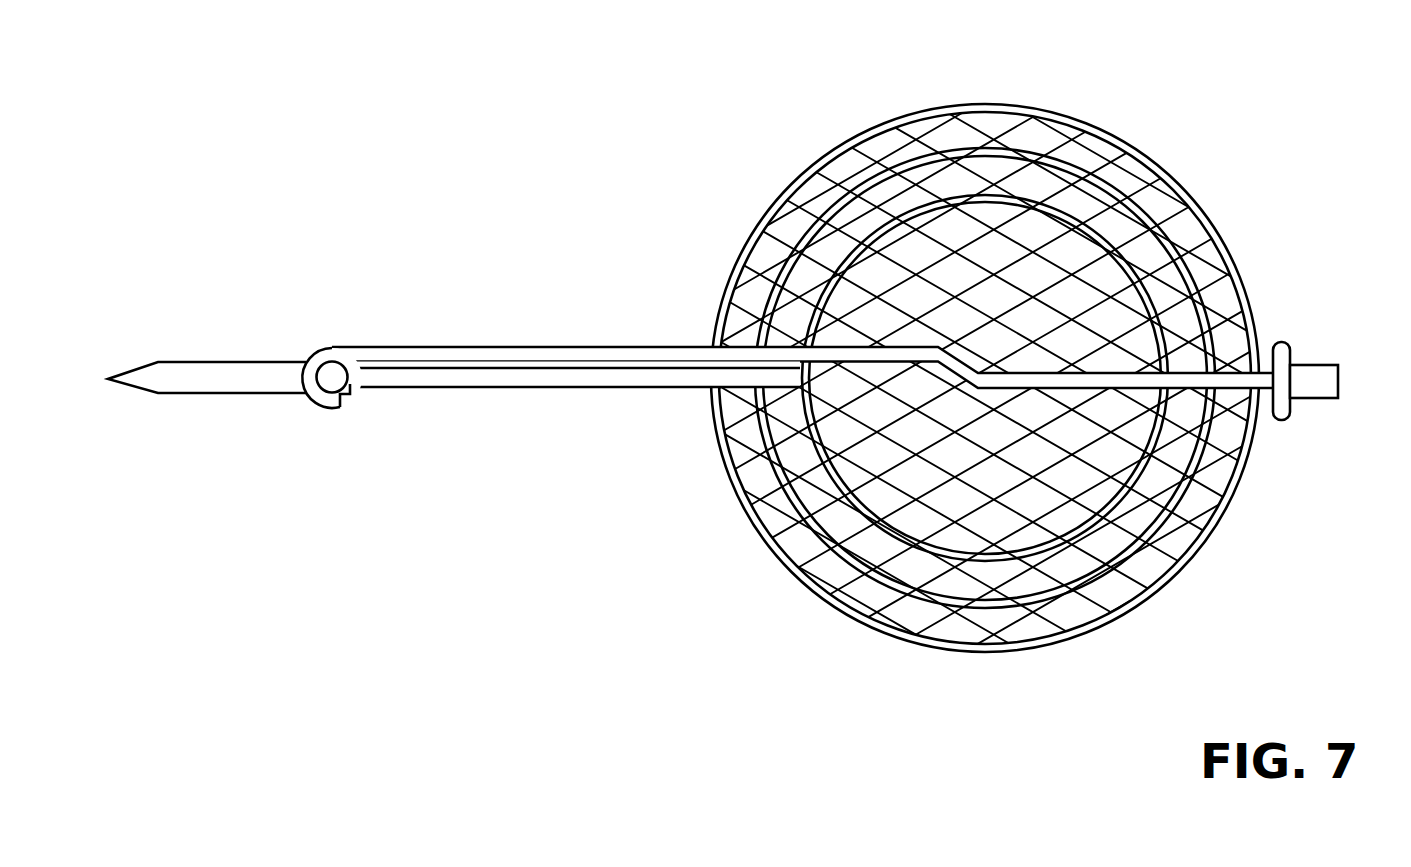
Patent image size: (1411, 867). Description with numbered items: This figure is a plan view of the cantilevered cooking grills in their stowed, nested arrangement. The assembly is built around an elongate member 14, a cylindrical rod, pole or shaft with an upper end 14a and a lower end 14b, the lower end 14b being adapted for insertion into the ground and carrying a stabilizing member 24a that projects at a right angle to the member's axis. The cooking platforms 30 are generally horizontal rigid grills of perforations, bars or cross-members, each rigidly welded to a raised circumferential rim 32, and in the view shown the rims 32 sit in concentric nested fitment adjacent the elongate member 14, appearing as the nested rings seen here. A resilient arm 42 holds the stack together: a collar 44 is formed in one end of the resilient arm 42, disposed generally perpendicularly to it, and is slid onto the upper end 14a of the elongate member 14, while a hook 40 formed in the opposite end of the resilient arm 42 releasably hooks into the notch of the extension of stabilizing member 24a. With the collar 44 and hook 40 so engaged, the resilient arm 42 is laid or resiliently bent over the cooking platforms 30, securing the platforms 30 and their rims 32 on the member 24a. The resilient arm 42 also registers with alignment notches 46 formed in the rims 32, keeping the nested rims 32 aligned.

The elongate member 14 is at (544, 392).
The upper end of elongate member 14a is at (1313, 400).
The lower end of elongate member 14b is at (264, 396).
The stabilizing member 24a is at (337, 378).
The cooking platform 30 is at (1156, 173).
The circumferential rim 32 is at (1087, 121).
The hook 40 is at (309, 352).
The resilient arm 42 is at (432, 343).
The collar 44 is at (1290, 340).
The alignment notch 46 is at (1213, 360).